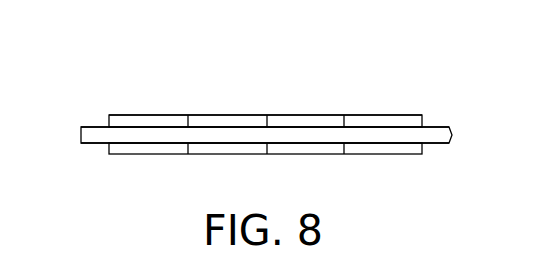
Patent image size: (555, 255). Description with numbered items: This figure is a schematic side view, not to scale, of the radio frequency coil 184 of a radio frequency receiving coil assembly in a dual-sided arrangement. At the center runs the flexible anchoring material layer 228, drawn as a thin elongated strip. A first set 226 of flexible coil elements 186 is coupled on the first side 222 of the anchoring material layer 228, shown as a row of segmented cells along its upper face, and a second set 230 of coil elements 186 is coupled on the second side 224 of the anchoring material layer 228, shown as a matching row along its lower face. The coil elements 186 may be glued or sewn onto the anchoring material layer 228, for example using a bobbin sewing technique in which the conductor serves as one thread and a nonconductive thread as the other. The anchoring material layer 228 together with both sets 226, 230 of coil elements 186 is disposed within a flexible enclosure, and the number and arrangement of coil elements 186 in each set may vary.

The radio frequency coil 184 is at (109, 46).
The coil elements 186 is at (302, 115).
The first side 222 is at (436, 124).
The second side 224 is at (435, 146).
The first set of coil elements 226 is at (265, 95).
The anchoring material layer 228 is at (452, 135).
The second set of coil elements 230 is at (217, 163).